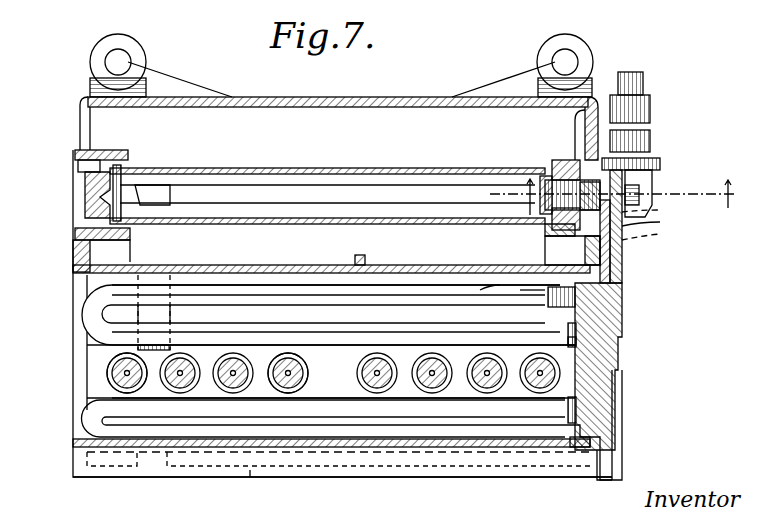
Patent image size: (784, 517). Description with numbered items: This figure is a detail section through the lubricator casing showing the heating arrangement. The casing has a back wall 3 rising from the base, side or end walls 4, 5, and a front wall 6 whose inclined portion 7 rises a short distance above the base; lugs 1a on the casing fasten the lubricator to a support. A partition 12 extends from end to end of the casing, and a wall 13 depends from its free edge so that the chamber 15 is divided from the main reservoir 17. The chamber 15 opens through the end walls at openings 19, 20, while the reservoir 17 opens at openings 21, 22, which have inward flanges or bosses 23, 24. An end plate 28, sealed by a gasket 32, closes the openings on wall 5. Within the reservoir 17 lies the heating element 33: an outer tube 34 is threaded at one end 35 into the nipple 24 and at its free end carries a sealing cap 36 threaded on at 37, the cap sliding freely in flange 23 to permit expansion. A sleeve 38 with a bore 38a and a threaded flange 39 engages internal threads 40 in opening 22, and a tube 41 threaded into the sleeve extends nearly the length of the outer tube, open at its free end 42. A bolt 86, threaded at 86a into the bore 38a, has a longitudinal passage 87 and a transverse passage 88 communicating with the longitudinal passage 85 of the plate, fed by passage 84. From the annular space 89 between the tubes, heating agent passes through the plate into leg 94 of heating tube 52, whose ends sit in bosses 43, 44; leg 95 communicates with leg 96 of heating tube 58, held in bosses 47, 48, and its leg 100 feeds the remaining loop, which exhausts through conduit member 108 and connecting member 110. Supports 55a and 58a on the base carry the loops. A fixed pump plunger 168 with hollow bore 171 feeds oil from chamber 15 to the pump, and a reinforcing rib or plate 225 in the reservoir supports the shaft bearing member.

The lugs 1a is at (122, 60).
The back wall 3 is at (385, 97).
The side or end wall 4 is at (73, 250).
The side or end wall 5 is at (592, 97).
The front wall 6 is at (266, 470).
The inclined portion of front wall 7 is at (240, 466).
The partition 12 is at (108, 378).
The wall 13 is at (308, 265).
The chamber 15 is at (380, 285).
The main reservoir 17 is at (340, 133).
The opening 19 is at (95, 343).
The opening 20 is at (545, 288).
The opening 21 is at (90, 166).
The opening 22 is at (560, 168).
The flange or boss 23 is at (120, 236).
The flange or nipple 24 is at (500, 285).
The end plate 28 is at (620, 317).
The gasket 32 is at (620, 452).
The heating element 33 is at (240, 168).
The outer tube 34 is at (238, 224).
The threaded end 35 is at (540, 170).
The closure and sealing cap 36 is at (85, 200).
The threads 37 is at (150, 168).
The sleeve 38 is at (545, 218).
The bore 38a is at (550, 230).
The circumferential threaded flange 39 is at (580, 160).
The internal threads 40 is at (575, 125).
The tube 41 is at (380, 196).
The free end 42 is at (160, 205).
The boss 43 is at (560, 308).
The boss 44 is at (620, 332).
The boss 47 is at (600, 402).
The boss 48 is at (575, 450).
The heating tube 52 is at (90, 305).
The support 55a is at (160, 319).
The heating tube 58 is at (90, 418).
The support 58a is at (120, 466).
The passage 84 is at (622, 283).
The longitudinal passage 85 is at (622, 260).
The bolt 86 is at (650, 185).
The threaded portion 86a is at (585, 240).
The longitudinal passage 87 is at (660, 240).
The transverse passage 88 is at (660, 212).
The annular space 89 is at (468, 210).
The leg 94 is at (380, 297).
The leg 95 is at (428, 332).
The leg 96 is at (333, 405).
The leg 100 is at (318, 437).
The conduit member 108 is at (660, 226).
The connecting member 110 is at (650, 145).
The fixed pump plunger 168 is at (308, 365).
The hollow bore 171 is at (107, 372).
The reinforcing rib or plate 225 is at (365, 258).